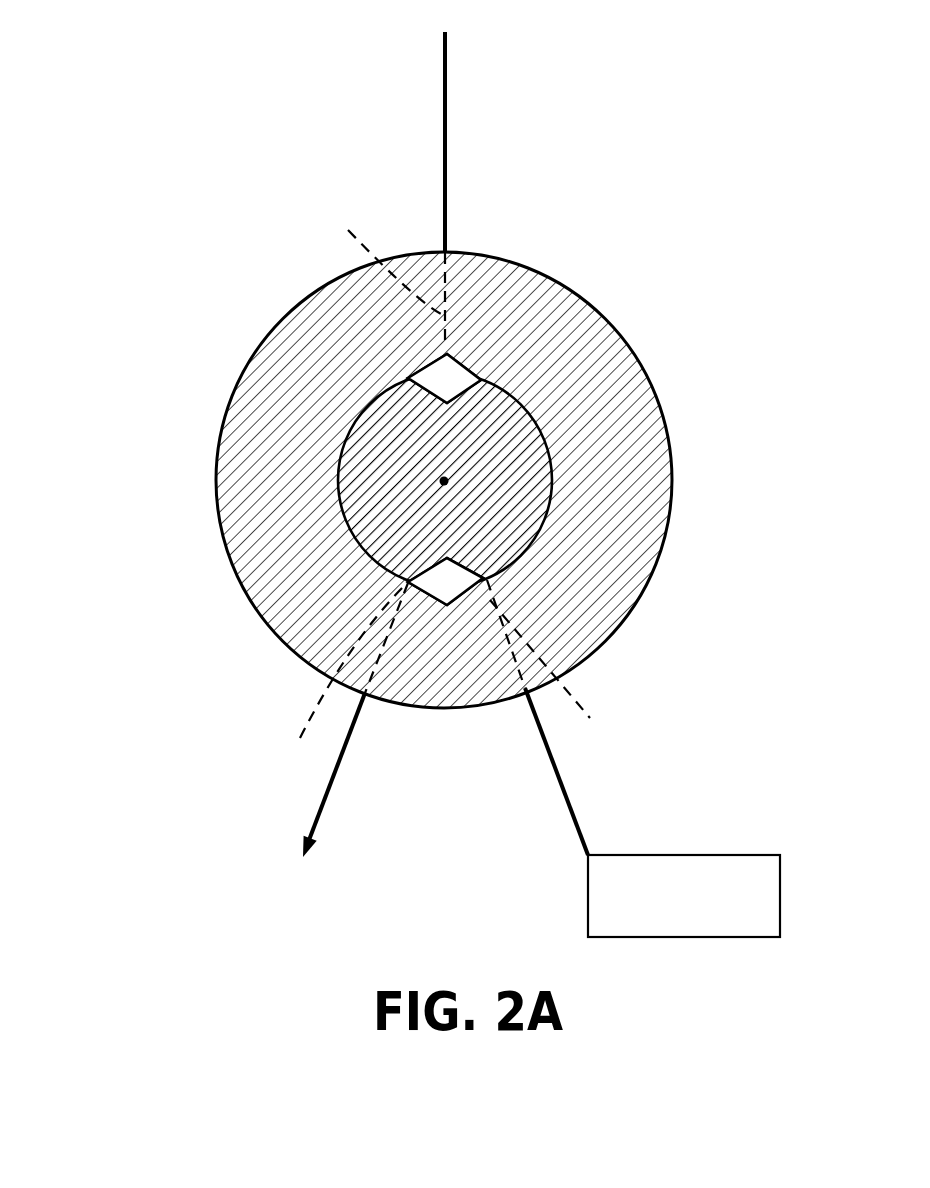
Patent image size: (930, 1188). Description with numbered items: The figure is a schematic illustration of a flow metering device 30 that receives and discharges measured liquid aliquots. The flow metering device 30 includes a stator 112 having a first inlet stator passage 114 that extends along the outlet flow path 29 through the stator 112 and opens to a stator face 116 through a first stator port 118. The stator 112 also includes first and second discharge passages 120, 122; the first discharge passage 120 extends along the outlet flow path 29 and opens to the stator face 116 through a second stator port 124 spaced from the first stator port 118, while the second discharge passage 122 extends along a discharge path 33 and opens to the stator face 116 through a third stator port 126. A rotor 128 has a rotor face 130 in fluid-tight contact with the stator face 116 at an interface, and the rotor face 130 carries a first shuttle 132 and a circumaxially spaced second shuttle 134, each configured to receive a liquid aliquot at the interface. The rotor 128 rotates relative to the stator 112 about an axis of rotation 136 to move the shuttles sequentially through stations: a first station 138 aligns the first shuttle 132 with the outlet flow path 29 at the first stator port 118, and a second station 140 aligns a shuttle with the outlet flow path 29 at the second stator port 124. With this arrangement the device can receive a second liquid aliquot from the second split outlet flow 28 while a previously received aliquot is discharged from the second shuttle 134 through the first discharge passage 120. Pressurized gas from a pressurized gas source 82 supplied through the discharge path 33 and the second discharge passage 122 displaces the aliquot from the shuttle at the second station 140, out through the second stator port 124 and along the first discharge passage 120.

The second split outlet flow 28 is at (448, 99).
The outlet flow path 29 is at (445, 185).
The flow metering device 30 is at (213, 290).
The discharge path 33 is at (553, 753).
The pressurized gas source 82 is at (780, 873).
The stator 112 is at (552, 310).
The first inlet stator passage 114 is at (383, 258).
The stator face 116 is at (540, 420).
The first stator port 118 is at (472, 360).
The first discharge passage 120 is at (340, 676).
The second discharge passage 122 is at (558, 676).
The second stator port 124 is at (408, 582).
The third stator port 126 is at (487, 580).
The rotor 128 is at (368, 473).
The rotor face 130 is at (340, 513).
The first shuttle 132 is at (460, 397).
The second shuttle 134 is at (460, 563).
The axis of rotation 136 is at (444, 481).
The first station 138 is at (472, 360).
The second station 140 is at (470, 595).